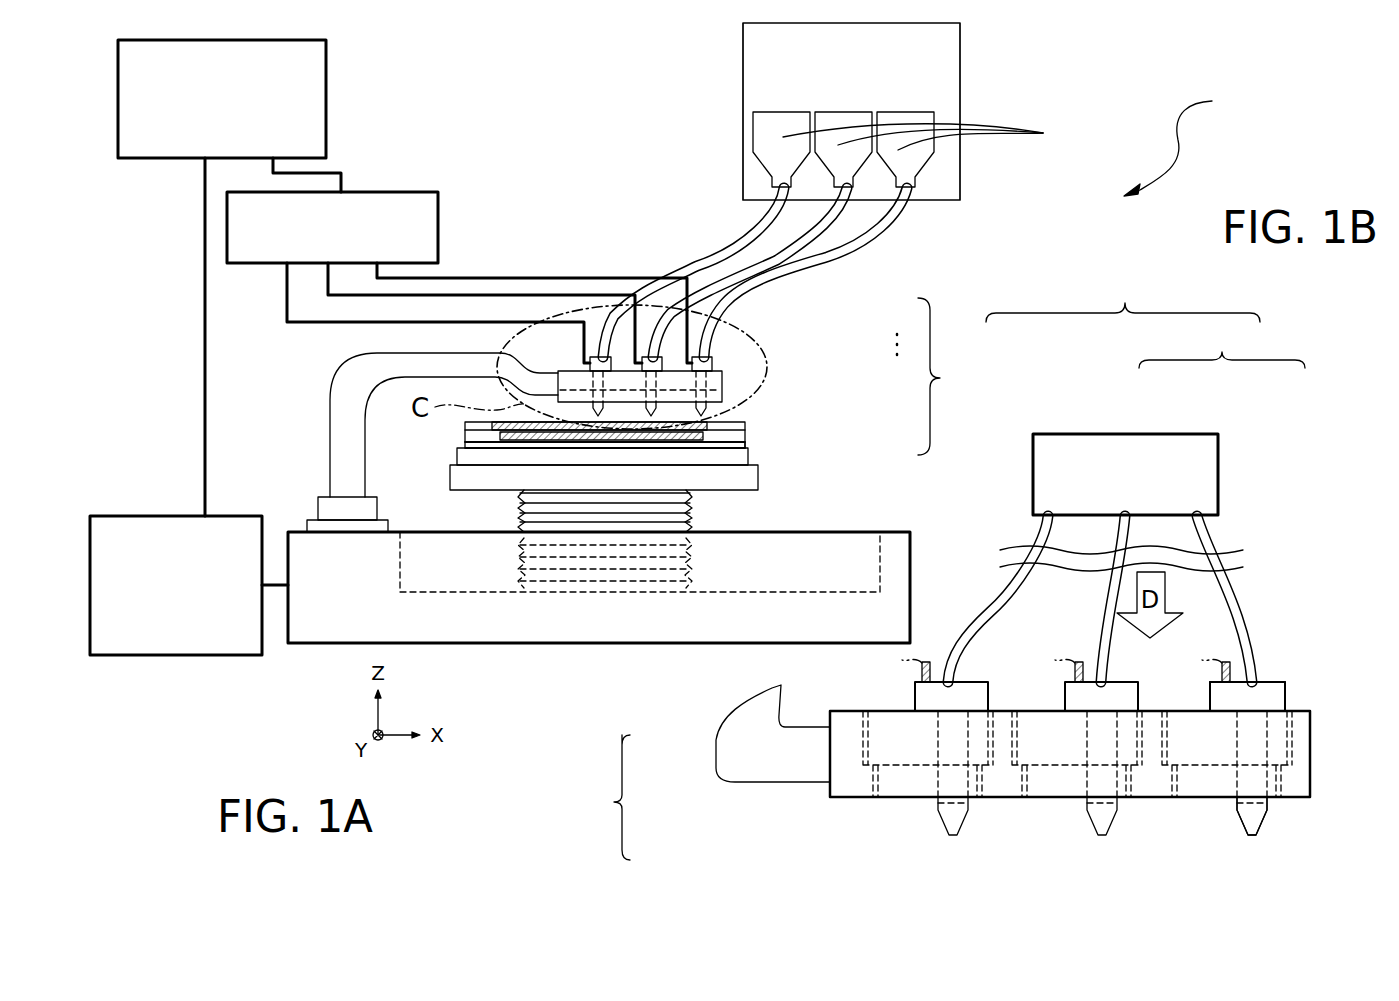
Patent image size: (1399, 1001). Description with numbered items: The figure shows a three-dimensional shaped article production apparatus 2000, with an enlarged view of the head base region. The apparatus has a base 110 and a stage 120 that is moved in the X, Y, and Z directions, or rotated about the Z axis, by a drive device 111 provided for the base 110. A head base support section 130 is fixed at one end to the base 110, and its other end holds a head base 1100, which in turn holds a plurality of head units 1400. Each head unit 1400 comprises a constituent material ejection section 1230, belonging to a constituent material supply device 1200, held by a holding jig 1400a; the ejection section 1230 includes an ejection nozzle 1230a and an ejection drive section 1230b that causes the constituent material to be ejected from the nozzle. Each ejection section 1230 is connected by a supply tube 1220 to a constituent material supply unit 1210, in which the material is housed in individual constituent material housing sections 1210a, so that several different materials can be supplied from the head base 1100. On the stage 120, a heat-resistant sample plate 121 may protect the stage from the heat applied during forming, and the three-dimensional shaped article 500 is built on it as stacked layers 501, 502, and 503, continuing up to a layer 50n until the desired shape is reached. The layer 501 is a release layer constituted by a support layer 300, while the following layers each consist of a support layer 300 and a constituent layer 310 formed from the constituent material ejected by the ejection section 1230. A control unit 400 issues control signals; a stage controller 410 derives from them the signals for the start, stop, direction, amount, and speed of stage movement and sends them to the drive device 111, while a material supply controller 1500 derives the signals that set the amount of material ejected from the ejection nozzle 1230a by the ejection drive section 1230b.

In FIG. 1A, the control unit 400 is at (327, 55).
In FIG. 1A, the material supply controller 1500 is at (443, 192).
In FIG. 1A, the stage controller 410 is at (233, 516).
In FIG. 1A, the base 110 is at (352, 597).
In FIG. 1A, the drive device 111 is at (520, 518).
In FIG. 1A, the stage 120 is at (722, 477).
In FIG. 1A, the sample plate 121 is at (732, 455).
In FIG. 1A, the head base support section 130 is at (353, 393).
In FIG. 1B, the head base support section 130 is at (817, 732).
In FIG. 1A, the support layer 300 is at (658, 409).
In FIG. 1A, the constituent layer 310 is at (522, 435).
In FIG. 1A, the three-dimensional shaped article 500 is at (946, 376).
In FIG. 1A, the layer 501 is at (745, 442).
In FIG. 1A, the layer 502 is at (745, 433).
In FIG. 1A, the layer 503 is at (745, 422).
In FIG. 1A, the layer 50n is at (897, 329).
In FIG. 1A, the head base 1100 is at (765, 366).
In FIG. 1B, the head base 1100 is at (1008, 785).
In FIG. 1B, the constituent material supply device 1200 is at (1123, 299).
In FIG. 1A, the constituent material supply unit 1210 is at (960, 70).
In FIG. 1B, the constituent material supply unit 1210 is at (1110, 434).
In FIG. 1A, the constituent material housing section 1210a is at (947, 133).
In FIG. 1A, the supply tube 1220 is at (840, 258).
In FIG. 1B, the supply tube 1220 is at (1055, 535).
In FIG. 1B, the constituent material ejection section 1230 is at (685, 840).
In FIG. 1B, the ejection nozzle 1230a is at (1270, 776).
In FIG. 1B, the ejection drive section 1230b is at (1267, 693).
In FIG. 1B, the head unit 1400 is at (935, 785).
In FIG. 1B, the holding jig 1400a is at (864, 745).
In FIG. 1A, the three-dimensional shaped article production apparatus 2000 is at (1193, 140).